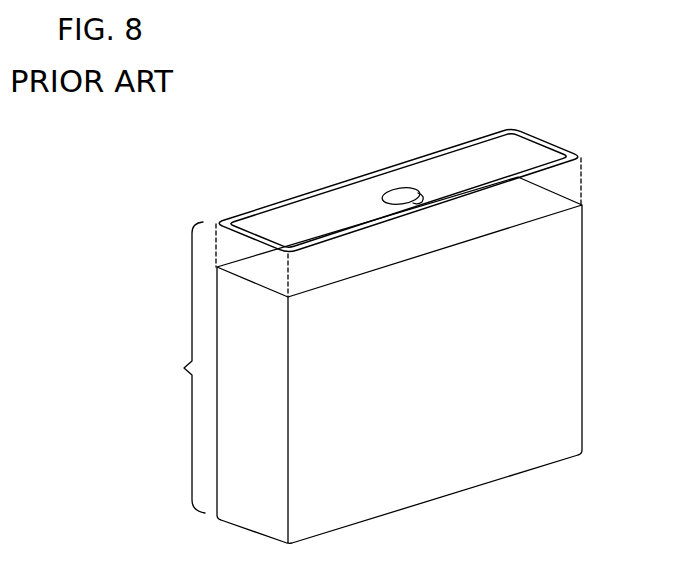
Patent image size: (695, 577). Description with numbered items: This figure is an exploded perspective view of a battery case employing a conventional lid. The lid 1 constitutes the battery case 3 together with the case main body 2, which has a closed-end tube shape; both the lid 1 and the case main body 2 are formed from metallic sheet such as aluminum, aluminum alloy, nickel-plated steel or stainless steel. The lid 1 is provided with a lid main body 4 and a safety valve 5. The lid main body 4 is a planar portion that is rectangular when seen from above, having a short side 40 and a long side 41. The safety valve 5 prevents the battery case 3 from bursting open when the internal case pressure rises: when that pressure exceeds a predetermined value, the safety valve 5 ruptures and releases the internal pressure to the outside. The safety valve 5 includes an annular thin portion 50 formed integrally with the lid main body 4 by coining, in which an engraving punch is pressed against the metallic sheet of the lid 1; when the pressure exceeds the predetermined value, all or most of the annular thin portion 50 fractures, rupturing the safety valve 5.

The lid 1 is at (416, 156).
The case main body 2 is at (583, 228).
The battery case 3 is at (180, 367).
The lid main body 4 is at (580, 160).
The short side 40 is at (550, 160).
The long side 41 is at (435, 159).
The safety valve 5 is at (425, 200).
The annular thin portion 50 is at (404, 205).